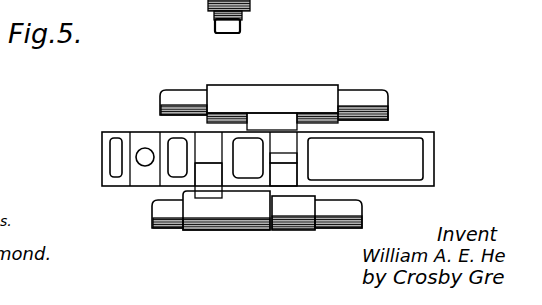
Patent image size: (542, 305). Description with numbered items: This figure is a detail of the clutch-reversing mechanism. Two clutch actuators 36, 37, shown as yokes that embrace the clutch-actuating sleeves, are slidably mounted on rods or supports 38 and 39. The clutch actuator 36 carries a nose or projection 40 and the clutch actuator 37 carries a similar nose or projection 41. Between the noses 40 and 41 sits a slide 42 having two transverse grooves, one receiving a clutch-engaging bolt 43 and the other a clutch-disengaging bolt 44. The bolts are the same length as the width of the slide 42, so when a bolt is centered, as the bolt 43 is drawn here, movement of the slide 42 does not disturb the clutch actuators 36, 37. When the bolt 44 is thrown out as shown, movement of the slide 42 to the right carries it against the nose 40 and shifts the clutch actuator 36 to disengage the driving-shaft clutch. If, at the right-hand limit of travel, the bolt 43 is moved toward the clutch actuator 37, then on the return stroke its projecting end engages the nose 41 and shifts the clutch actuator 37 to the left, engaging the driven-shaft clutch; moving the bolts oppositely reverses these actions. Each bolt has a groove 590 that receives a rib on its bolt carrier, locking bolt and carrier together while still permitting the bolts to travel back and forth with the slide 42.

The clutch actuator 36 is at (253, 216).
The clutch actuator 37 is at (312, 87).
The rod or support 38 is at (340, 214).
The rod or support 39 is at (365, 98).
The nose or projection 40 is at (264, 189).
The nose or projection 41 is at (257, 120).
The slide 42 is at (437, 147).
The clutch-engaging bolt 43 is at (288, 173).
The clutch-disengaging bolt 44 is at (214, 185).
The groove 590 is at (204, 162).